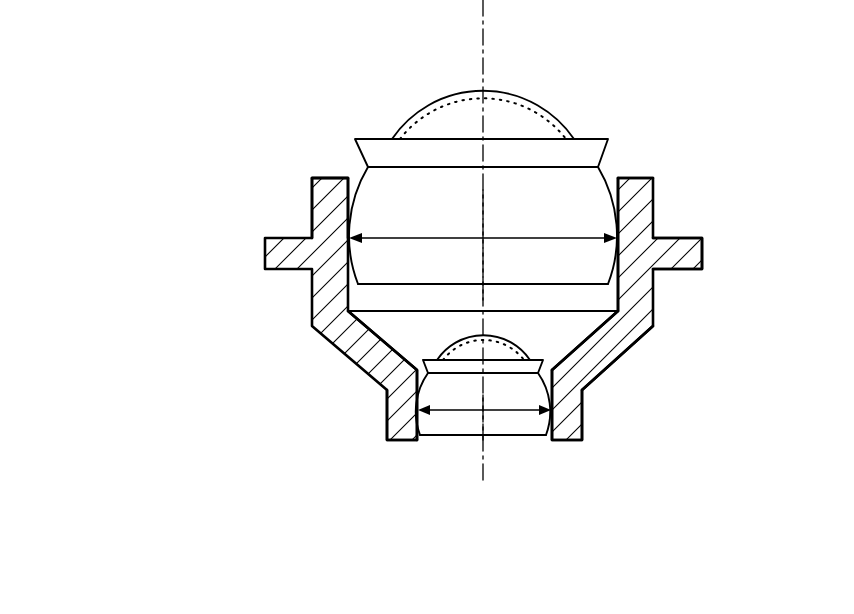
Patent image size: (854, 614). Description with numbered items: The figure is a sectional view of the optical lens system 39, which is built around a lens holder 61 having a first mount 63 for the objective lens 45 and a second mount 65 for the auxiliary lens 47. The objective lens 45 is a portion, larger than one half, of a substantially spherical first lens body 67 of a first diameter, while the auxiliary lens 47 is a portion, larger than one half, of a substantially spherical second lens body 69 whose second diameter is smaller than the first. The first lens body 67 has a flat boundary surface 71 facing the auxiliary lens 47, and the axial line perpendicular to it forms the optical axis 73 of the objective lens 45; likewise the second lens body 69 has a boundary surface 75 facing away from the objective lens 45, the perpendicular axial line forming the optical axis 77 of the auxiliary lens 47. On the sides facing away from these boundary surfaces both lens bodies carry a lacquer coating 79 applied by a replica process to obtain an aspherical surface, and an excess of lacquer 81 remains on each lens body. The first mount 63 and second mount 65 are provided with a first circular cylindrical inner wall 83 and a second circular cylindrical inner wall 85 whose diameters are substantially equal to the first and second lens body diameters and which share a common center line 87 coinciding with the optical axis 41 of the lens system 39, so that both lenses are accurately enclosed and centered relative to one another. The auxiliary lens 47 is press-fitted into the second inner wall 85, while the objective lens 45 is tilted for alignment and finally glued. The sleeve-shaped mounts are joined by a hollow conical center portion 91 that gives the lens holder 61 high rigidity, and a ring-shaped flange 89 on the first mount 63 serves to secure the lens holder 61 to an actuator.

The optical lens system 39 is at (152, 317).
The optical axis of the lens system 41 is at (524, 241).
The common center line 87 is at (483, 6).
The objective lens 45 is at (545, 215).
The auxiliary lens 47 is at (518, 440).
The lens holder 61 is at (327, 302).
The first mount 63 is at (317, 224).
The second mount 65 is at (397, 420).
The first lens body 67 is at (350, 177).
The second lens body 69 is at (415, 384).
The boundary surface 71 is at (549, 286).
The optical axis of the objective lens 73 is at (480, 211).
The boundary surface 75 is at (442, 437).
The optical axis of the auxiliary lens 77 is at (483, 420).
The lacquer coating 79 is at (508, 100).
The excess of lacquer 81 is at (558, 155).
The first circular cylindrical inner wall 83 is at (622, 290).
The second circular cylindrical inner wall 85 is at (585, 415).
The ring-shaped flange 89 is at (690, 253).
The hollow conical center portion 91 is at (597, 355).